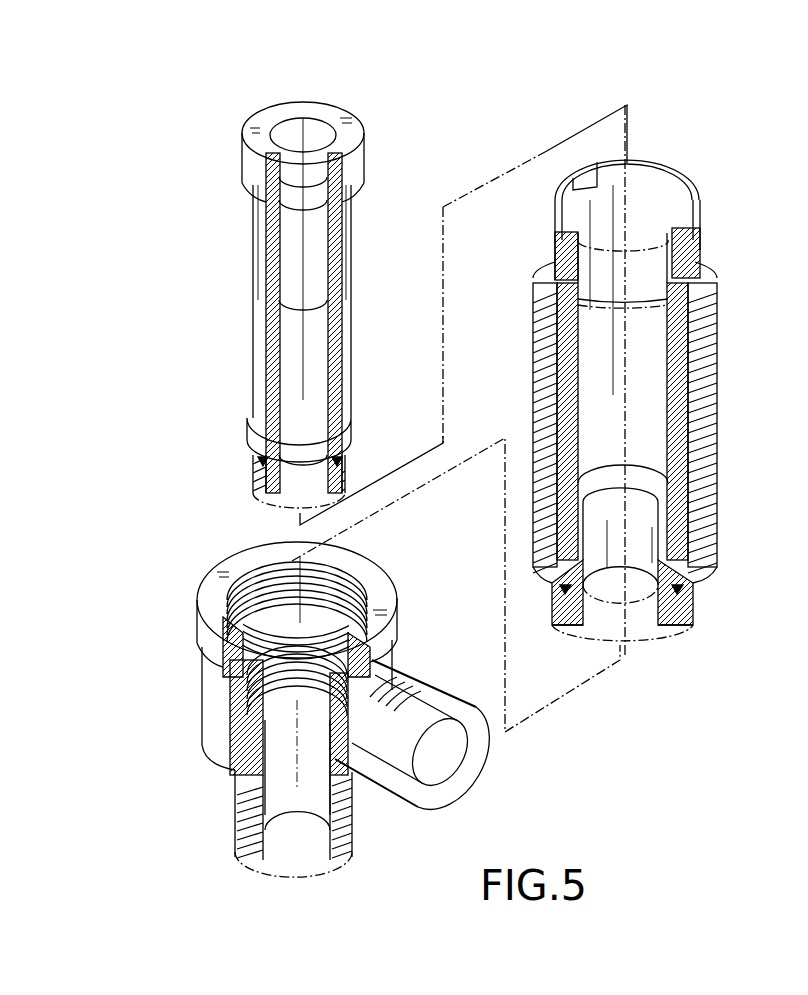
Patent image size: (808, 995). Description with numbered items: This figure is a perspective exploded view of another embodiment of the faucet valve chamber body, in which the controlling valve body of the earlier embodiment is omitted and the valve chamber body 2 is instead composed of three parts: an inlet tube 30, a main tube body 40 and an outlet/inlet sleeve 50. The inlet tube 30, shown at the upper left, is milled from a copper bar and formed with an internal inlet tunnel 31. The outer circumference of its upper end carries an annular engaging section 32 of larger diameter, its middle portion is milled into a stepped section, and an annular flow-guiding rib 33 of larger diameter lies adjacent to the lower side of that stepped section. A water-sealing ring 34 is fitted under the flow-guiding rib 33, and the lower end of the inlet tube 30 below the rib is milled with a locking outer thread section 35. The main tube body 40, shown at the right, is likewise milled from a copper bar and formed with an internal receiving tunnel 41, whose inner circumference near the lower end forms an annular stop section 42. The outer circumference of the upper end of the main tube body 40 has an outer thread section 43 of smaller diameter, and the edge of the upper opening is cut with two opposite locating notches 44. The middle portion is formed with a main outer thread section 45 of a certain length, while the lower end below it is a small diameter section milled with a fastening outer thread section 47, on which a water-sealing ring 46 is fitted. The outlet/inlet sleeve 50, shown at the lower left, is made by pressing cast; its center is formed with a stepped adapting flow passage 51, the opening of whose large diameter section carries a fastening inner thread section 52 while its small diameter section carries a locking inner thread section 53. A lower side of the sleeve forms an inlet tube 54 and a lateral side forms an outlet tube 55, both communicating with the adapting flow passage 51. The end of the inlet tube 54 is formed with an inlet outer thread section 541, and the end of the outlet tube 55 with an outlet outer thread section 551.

The valve chamber body 2 is at (754, 100).
The inlet tube 30 is at (228, 308).
The inlet tunnel 31 is at (308, 273).
The annular engaging section 32 is at (355, 140).
The annular flow-guiding rib 33 is at (253, 420).
The water-sealing ring 34 is at (338, 462).
The locking outer thread section 35 is at (253, 477).
The main tube body 40 is at (522, 382).
The receiving tunnel 41 is at (630, 395).
The annular stop section 42 is at (712, 558).
The outer thread section 43 is at (563, 255).
The locating notches 44 is at (690, 238).
The main outer thread section 45 is at (712, 467).
The water-sealing ring 46 is at (690, 598).
The fastening outer thread section 47 is at (560, 610).
The outlet/inlet sleeve 50 is at (193, 711).
The adapting flow passage 51 is at (280, 630).
The fastening inner thread section 52 is at (337, 598).
The locking inner thread section 53 is at (262, 728).
The inlet tube 54 is at (257, 853).
The outlet tube 55 is at (453, 777).
The inlet outer thread section 541 is at (360, 843).
The outlet outer thread section 551 is at (427, 690).